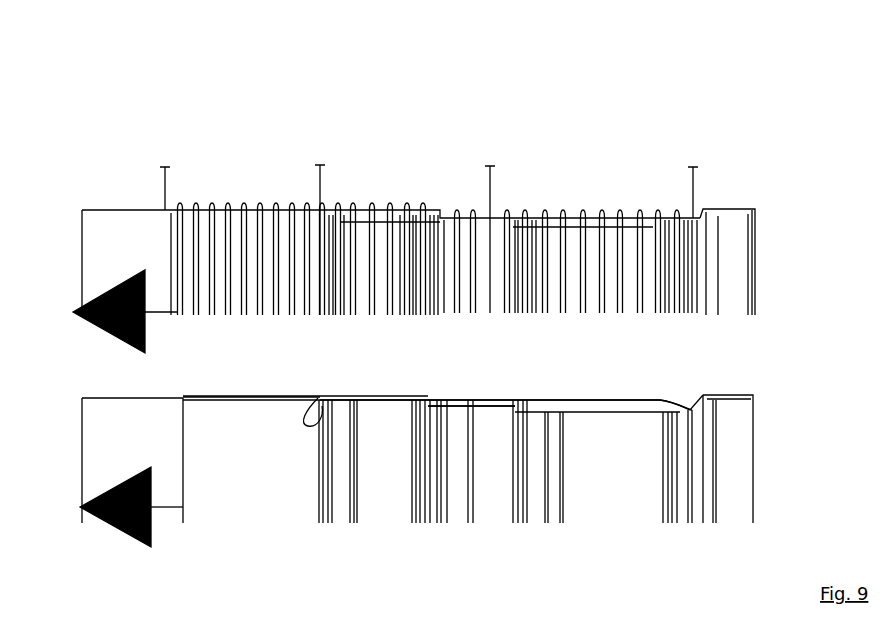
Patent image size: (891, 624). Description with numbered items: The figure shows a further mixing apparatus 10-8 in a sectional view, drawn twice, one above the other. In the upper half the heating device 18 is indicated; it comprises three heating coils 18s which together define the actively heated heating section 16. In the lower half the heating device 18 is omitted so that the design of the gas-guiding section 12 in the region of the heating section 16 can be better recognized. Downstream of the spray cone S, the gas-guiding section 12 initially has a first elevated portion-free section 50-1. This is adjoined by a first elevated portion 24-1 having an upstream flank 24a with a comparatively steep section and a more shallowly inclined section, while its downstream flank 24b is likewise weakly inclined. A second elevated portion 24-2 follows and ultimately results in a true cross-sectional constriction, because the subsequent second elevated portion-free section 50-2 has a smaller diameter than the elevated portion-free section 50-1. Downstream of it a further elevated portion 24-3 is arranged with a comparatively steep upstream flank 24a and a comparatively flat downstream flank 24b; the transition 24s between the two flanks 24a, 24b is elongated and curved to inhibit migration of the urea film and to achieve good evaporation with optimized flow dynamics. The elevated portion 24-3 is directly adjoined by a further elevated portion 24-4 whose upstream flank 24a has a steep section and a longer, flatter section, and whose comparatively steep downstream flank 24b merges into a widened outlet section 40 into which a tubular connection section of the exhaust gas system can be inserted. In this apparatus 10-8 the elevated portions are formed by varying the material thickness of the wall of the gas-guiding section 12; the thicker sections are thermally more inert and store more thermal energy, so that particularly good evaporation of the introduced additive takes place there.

The mixing apparatus 10-8 is at (596, 134).
The gas-guiding section 12 is at (641, 405).
The heating section 16 is at (197, 162).
The heating device 18 is at (468, 76).
The heating coils 18s is at (250, 160).
The first elevated portion 24-1 is at (355, 390).
The second elevated portion 24-2 is at (441, 390).
The further elevated portion 24-3 is at (587, 391).
The further elevated portion 24-4 is at (699, 392).
The upstream flank 24a is at (310, 395).
The downstream flank 24b is at (388, 402).
The transition 24s is at (343, 422).
The widened outlet section 40 is at (765, 393).
The first elevated portion-free section 50-1 is at (245, 396).
The second elevated portion-free section 50-2 is at (481, 398).
The spray cone S is at (100, 330).